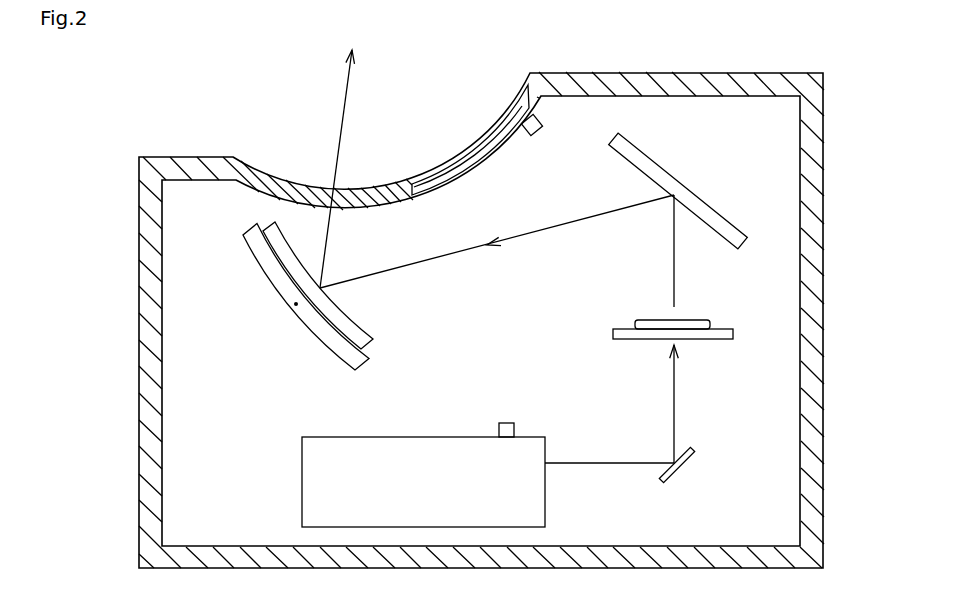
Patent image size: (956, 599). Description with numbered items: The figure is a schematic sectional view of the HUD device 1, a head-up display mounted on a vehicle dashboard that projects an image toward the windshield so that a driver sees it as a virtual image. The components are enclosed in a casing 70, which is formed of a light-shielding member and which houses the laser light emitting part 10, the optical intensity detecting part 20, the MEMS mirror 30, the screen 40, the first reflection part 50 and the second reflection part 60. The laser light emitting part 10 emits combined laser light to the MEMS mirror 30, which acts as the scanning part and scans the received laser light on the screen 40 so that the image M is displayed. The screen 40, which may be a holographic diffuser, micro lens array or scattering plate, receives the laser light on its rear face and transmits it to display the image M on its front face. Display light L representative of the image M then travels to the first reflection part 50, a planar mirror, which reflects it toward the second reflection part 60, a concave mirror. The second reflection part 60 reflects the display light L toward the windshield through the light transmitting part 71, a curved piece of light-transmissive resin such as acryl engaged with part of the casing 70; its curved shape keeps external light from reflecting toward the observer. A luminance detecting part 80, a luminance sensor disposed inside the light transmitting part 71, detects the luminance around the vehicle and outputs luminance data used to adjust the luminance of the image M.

The HUD device 1 is at (777, 57).
The laser light emitting part 10 is at (375, 435).
The optical intensity detecting part 20 is at (517, 432).
The MEMS mirror 30 is at (690, 463).
The screen 40 is at (700, 340).
The image M is at (702, 323).
The first reflection part 50 is at (673, 172).
The second reflection part 60 is at (245, 232).
The casing 70 is at (625, 72).
The light transmitting part 71 is at (478, 178).
The luminance detecting part 80 is at (540, 135).
The display light L is at (466, 253).